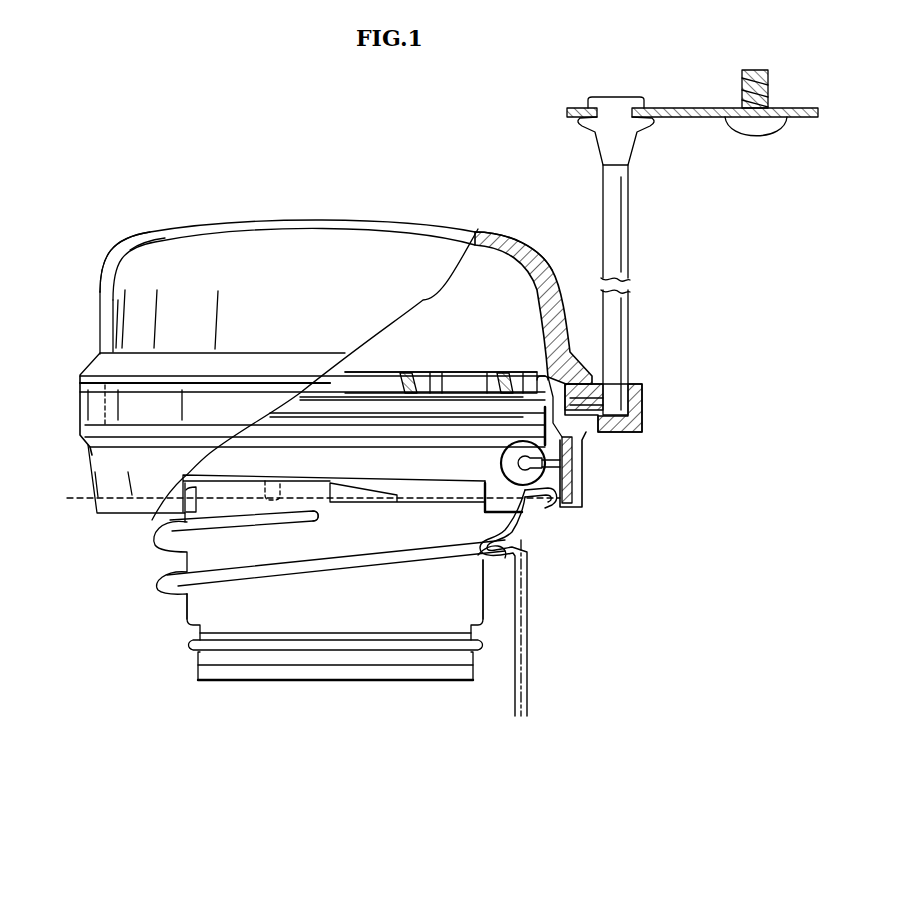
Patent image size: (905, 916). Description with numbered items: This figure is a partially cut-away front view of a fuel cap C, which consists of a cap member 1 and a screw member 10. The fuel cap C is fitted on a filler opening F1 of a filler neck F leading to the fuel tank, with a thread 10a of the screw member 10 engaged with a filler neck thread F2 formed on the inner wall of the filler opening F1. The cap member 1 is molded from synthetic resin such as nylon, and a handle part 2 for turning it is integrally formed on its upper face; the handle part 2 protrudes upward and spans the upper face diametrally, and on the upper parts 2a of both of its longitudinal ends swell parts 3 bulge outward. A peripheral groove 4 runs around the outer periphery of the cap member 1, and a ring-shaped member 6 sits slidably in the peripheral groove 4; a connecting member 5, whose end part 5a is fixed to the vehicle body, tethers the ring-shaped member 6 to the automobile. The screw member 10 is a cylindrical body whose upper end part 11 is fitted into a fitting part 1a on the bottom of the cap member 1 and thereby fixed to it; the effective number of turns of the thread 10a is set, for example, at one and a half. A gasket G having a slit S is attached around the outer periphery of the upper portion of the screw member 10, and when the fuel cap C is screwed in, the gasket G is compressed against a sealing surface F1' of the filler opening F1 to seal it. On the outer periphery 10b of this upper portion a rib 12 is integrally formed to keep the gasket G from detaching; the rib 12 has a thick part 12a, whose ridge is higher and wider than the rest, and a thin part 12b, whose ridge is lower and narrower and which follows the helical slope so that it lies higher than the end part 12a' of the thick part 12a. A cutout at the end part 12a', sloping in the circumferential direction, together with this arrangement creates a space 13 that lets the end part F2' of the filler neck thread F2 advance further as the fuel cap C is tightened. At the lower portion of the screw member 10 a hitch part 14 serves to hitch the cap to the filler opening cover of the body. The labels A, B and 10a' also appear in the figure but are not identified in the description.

The fuel cap C is at (234, 140).
The cap member 1 is at (308, 212).
The fitting part 1a is at (415, 392).
The handle part 2 is at (408, 238).
The upper parts 2a is at (102, 286).
The swell parts 3 is at (152, 266).
The peripheral groove 4 is at (86, 440).
The connecting member 5 is at (658, 268).
The end part 5a is at (775, 142).
The ring-shaped member 6 is at (83, 400).
The gasket G is at (548, 455).
The slit S is at (578, 470).
The sealing surface F1' is at (586, 500).
The filler opening F1 is at (563, 517).
The end part of the filler neck thread F2' is at (334, 477).
The filler neck thread F2 is at (525, 570).
The section line B is at (152, 500).
The screw member 10 is at (165, 622).
The thread 10a is at (291, 552).
The thread end 10a' is at (318, 557).
The outer periphery 10b is at (148, 500).
The upper end part 11 is at (480, 402).
The rib 12 is at (498, 573).
The thick part 12a is at (425, 619).
The end part 12a' is at (407, 478).
The thin part 12b is at (250, 482).
The space 13 is at (345, 522).
The hitch part 14 is at (186, 652).
The filler neck F is at (528, 685).
The direction arrow A is at (686, 636).